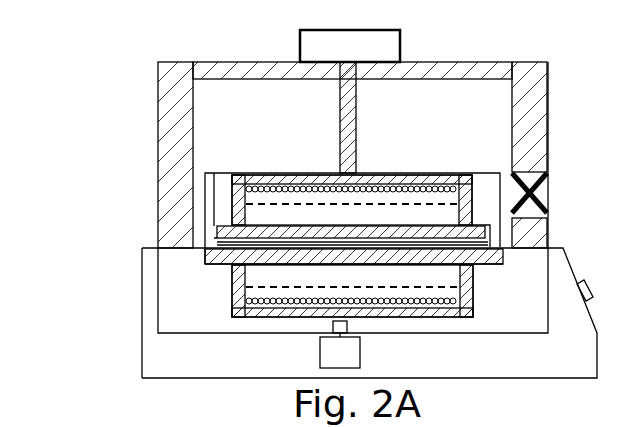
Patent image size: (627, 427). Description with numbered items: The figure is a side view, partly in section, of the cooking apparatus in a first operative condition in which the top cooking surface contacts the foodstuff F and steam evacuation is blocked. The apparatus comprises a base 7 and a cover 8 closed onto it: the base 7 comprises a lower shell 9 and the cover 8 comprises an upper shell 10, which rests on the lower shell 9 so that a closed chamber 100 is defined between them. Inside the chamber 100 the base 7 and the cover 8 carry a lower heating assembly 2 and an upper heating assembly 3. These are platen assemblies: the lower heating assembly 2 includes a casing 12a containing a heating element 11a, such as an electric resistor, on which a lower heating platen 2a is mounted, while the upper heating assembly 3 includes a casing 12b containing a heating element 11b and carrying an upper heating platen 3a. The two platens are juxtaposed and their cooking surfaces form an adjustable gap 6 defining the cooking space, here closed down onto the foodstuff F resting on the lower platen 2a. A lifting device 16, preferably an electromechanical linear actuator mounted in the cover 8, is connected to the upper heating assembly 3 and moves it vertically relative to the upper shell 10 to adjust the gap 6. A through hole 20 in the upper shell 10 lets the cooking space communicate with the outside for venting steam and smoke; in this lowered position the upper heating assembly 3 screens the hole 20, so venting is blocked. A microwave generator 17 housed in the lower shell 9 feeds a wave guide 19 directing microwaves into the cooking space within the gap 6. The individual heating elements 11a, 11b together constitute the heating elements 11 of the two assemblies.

The chamber 100 is at (221, 100).
The upper shell 10 is at (162, 160).
The cover 8 is at (148, 176).
The lower shell 9 is at (150, 278).
The base 7 is at (135, 287).
The lifting device 16 is at (400, 45).
The upper heating assembly 3 is at (460, 162).
The upper heating platen 3a is at (298, 232).
The upper casing 12b is at (232, 212).
The lower casing 12a is at (262, 254).
The foodstuff F is at (267, 243).
The adjustable gap 6 is at (485, 242).
The through hole 20 is at (548, 193).
The stator core 11 is at (256, 176).
The upper heating element 11b is at (398, 183).
The lower heating element 11a is at (428, 306).
The lower heating assembly 2 is at (485, 300).
The lower heating platen 2a is at (290, 252).
The microwave generator 17 is at (360, 356).
The wave guide 19 is at (347, 328).